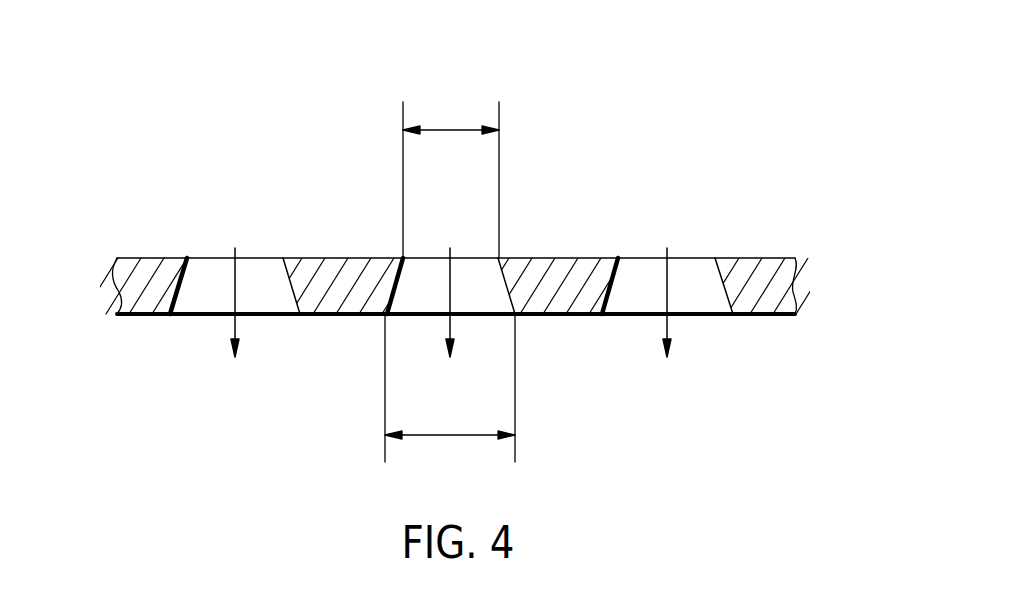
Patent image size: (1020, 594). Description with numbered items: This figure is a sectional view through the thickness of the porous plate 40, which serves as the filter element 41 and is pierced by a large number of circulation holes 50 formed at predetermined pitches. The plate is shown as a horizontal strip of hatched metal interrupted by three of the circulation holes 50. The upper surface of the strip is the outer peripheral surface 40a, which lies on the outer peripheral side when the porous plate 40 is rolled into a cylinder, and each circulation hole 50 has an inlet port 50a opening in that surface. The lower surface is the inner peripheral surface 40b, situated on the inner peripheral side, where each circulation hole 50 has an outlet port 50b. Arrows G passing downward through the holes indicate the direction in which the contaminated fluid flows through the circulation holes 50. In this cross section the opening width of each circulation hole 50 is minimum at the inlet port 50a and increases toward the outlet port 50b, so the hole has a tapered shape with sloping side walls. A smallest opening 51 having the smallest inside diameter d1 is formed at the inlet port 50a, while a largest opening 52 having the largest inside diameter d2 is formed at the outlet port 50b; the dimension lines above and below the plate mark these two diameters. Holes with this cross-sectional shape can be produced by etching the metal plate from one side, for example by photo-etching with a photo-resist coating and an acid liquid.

The porous plate 40 is at (750, 258).
The outer peripheral surface 40a is at (555, 258).
The inner peripheral surface 40b is at (558, 318).
The filter element 41 is at (310, 135).
The circulation hole 50 is at (210, 258).
The inlet port 50a is at (253, 258).
The outlet port 50b is at (215, 318).
The smallest opening 51 is at (187, 258).
The largest opening 52 is at (170, 318).
The arrows indicating flow direction G is at (237, 322).
The smallest inside diameter d1 is at (452, 130).
The largest inside diameter d2 is at (448, 437).